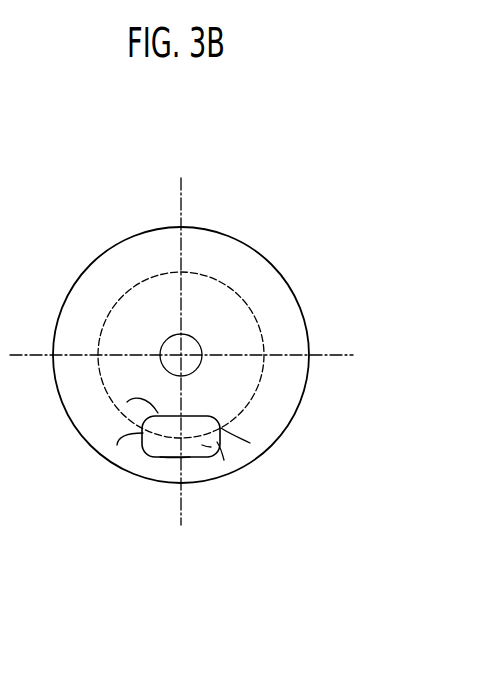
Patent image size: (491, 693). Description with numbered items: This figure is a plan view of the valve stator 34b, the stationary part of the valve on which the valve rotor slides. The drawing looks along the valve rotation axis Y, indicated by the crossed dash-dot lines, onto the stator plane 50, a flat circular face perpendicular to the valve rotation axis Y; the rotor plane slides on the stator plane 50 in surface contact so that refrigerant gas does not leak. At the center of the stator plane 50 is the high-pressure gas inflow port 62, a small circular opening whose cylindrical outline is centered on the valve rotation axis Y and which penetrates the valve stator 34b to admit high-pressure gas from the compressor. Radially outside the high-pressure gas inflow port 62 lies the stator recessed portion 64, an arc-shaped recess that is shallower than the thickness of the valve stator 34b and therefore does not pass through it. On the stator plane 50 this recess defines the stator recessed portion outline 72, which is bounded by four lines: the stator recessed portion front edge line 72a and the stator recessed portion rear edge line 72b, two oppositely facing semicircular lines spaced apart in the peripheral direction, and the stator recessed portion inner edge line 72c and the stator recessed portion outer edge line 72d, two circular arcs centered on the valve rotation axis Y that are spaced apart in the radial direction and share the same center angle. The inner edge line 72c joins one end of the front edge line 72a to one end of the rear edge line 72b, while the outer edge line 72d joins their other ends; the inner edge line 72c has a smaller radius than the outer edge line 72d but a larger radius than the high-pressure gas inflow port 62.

The valve stator 34b is at (198, 618).
The stator plane 50 is at (223, 250).
The high-pressure gas inflow port 62 is at (205, 366).
The stator recessed portion 64 is at (224, 460).
The stator recessed portion outline 72 is at (196, 464).
The stator recessed portion front edge line 72a is at (117, 445).
The stator recessed portion rear edge line 72b is at (250, 443).
The stator recessed portion inner edge line 72c is at (127, 402).
The stator recessed portion outer edge line 72d is at (170, 457).
The valve rotation axis Y is at (182, 353).